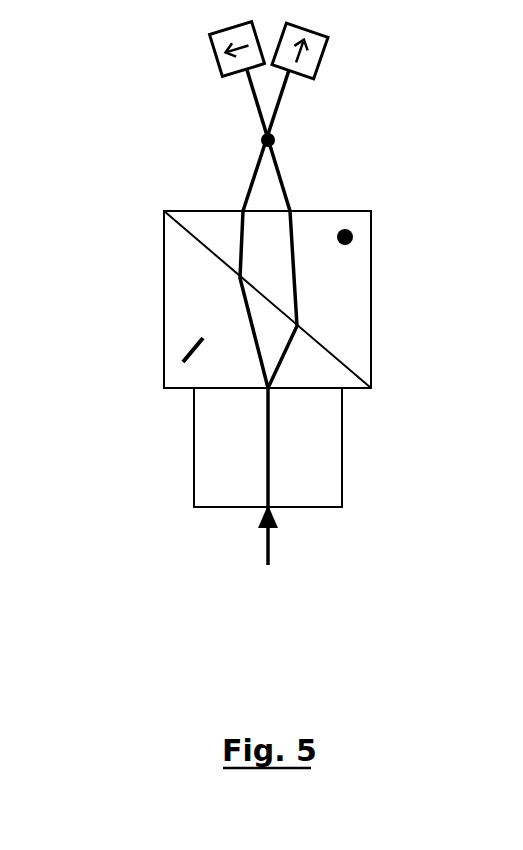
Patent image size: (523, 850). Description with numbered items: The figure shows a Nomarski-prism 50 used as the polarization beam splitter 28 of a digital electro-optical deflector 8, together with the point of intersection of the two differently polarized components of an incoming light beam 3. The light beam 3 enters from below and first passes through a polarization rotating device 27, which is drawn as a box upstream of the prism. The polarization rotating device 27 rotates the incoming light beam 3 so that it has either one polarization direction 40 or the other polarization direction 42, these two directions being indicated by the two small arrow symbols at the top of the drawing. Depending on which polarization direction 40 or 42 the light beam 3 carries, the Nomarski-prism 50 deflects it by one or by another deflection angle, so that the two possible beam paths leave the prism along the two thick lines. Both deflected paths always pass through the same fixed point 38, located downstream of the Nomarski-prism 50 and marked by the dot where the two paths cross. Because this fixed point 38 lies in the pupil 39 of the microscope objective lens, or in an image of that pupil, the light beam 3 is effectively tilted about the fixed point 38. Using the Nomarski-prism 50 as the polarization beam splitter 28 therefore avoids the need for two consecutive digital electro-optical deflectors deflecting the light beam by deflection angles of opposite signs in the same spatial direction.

The light beam 3 is at (270, 544).
The digital electro-optical deflector 8 is at (382, 277).
The polarization rotating device 27 is at (182, 443).
The polarization beam splitter 28 is at (267, 299).
The fixed point 38 is at (276, 140).
The pupil 39 is at (243, 150).
The polarization direction 40 is at (214, 59).
The polarization direction 42 is at (329, 58).
The Nomarski-prism 50 is at (148, 297).